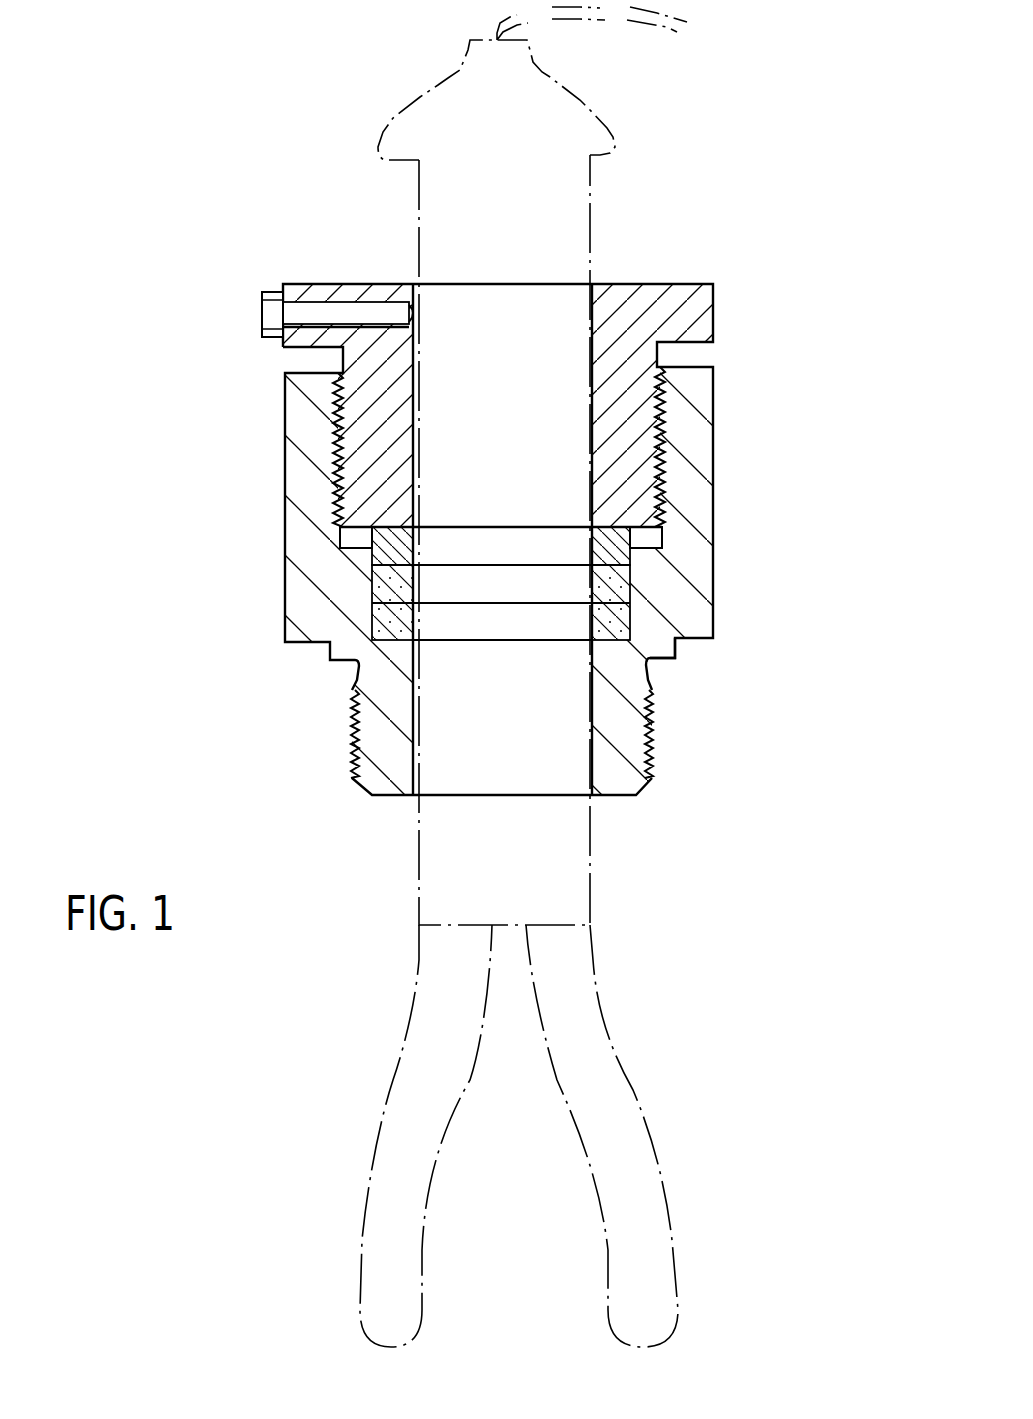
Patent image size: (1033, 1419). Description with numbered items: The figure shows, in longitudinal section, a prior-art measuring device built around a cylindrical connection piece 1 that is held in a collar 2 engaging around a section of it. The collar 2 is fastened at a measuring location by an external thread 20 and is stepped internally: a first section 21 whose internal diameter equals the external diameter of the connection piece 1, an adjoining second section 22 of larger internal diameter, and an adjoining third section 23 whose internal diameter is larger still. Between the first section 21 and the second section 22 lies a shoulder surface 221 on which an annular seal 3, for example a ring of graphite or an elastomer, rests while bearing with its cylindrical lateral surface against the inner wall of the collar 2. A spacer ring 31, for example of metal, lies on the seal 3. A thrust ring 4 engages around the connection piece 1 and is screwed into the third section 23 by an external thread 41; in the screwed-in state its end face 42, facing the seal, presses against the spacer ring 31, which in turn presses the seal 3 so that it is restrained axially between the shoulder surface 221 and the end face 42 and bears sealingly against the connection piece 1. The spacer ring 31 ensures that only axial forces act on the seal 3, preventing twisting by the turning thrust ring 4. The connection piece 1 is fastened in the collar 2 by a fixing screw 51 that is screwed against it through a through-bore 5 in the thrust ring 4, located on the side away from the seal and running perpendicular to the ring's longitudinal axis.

The connection piece 1 is at (413, 223).
The collar 2 is at (420, 581).
The annular seal 3 is at (627, 596).
The thrust ring 4 is at (490, 388).
The through-bore 5 is at (301, 285).
The external thread 20 is at (652, 742).
The first section 21 is at (350, 757).
The second section 22 is at (353, 610).
The third section 23 is at (305, 435).
The spacer ring 31 is at (628, 558).
The external thread 41 is at (665, 410).
The end face 42 is at (660, 548).
The fixing screw 51 is at (268, 312).
The shoulder surface 221 is at (643, 672).